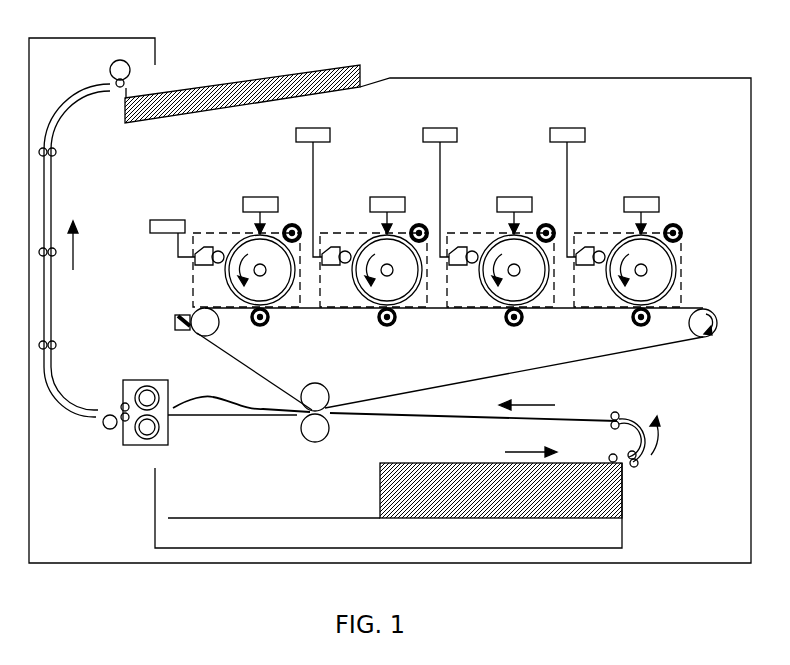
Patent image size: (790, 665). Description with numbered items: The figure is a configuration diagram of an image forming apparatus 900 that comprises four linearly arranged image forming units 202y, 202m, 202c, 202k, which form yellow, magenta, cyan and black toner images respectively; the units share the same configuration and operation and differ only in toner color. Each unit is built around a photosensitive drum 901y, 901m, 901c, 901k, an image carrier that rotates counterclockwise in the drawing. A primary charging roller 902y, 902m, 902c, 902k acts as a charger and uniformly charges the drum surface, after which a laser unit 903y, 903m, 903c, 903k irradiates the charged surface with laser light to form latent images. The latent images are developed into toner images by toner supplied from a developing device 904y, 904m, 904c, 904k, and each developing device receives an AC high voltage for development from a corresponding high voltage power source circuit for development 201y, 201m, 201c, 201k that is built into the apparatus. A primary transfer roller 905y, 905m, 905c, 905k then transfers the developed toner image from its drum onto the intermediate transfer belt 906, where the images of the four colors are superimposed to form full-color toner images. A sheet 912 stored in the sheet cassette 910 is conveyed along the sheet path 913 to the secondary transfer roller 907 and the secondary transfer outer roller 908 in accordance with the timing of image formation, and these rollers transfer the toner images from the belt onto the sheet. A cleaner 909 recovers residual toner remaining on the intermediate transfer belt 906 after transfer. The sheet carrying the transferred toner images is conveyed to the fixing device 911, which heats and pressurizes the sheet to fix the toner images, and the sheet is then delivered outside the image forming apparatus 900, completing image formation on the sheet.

The image forming apparatus 900 is at (604, 77).
The high voltage power source circuit for development 201y is at (158, 220).
The high voltage power source circuit for development 201m is at (350, 120).
The high voltage power source circuit for development 201c is at (477, 120).
The high voltage power source circuit for development 201k is at (605, 120).
The image forming unit 202y is at (193, 233).
The image forming unit 202m is at (318, 233).
The image forming unit 202c is at (445, 233).
The image forming unit 202k is at (572, 233).
The laser unit 903y is at (259, 196).
The laser unit 903m is at (386, 196).
The laser unit 903c is at (513, 196).
The laser unit 903k is at (640, 196).
The primary charging roller 902y is at (294, 222).
The primary charging roller 902m is at (421, 222).
The primary charging roller 902c is at (548, 222).
The primary charging roller 902k is at (675, 222).
The developing device 904y is at (208, 246).
The developing device 904m is at (335, 246).
The developing device 904c is at (462, 246).
The developing device 904k is at (589, 246).
The photosensitive drum 901y is at (283, 302).
The photosensitive drum 901m is at (410, 302).
The photosensitive drum 901c is at (534, 302).
The photosensitive drum 901k is at (677, 260).
The primary transfer roller 905y is at (263, 327).
The primary transfer roller 905m is at (390, 327).
The primary transfer roller 905c is at (516, 327).
The primary transfer roller 905k is at (633, 320).
The intermediate transfer belt 906 is at (590, 361).
The secondary transfer roller 907 is at (330, 390).
The secondary transfer outer roller 908 is at (302, 433).
The cleaner 909 is at (177, 316).
The sheet cassette 910 is at (624, 528).
The fixing device 911 is at (127, 380).
The sheet 912 is at (398, 463).
The sheet conveyance path 913 is at (176, 405).